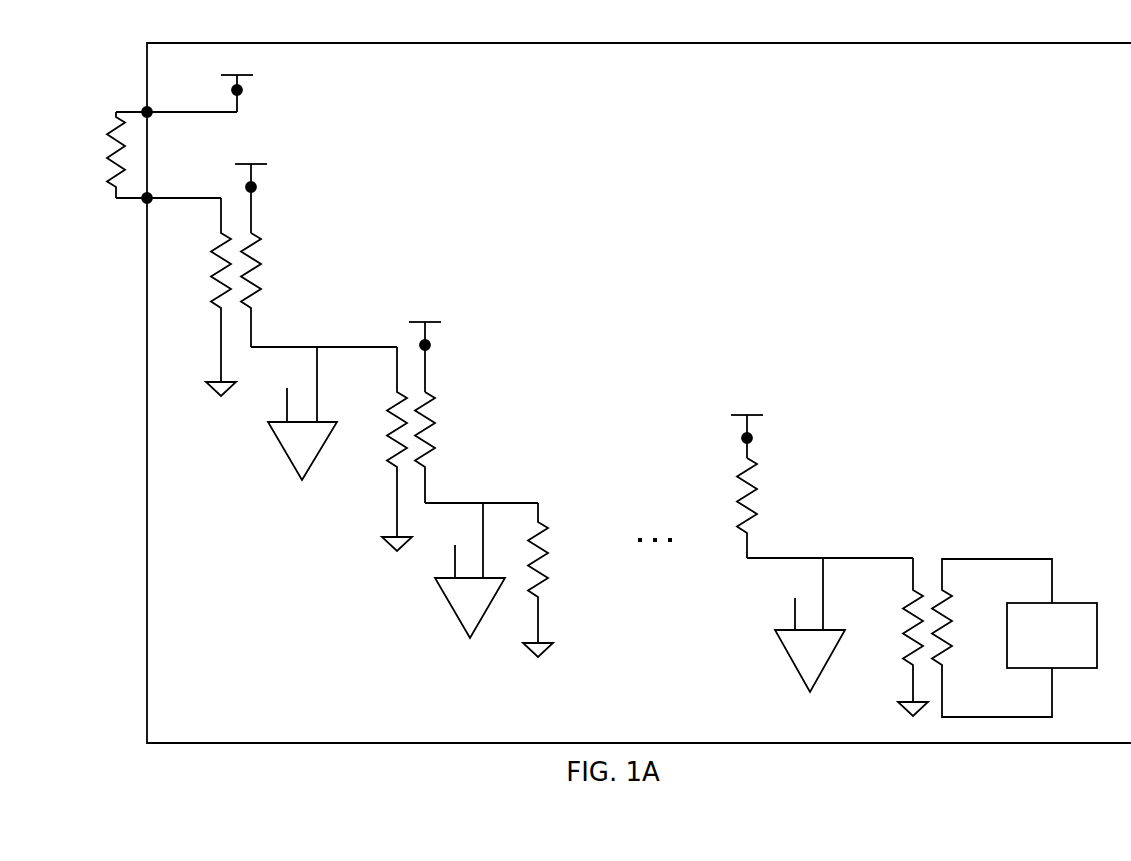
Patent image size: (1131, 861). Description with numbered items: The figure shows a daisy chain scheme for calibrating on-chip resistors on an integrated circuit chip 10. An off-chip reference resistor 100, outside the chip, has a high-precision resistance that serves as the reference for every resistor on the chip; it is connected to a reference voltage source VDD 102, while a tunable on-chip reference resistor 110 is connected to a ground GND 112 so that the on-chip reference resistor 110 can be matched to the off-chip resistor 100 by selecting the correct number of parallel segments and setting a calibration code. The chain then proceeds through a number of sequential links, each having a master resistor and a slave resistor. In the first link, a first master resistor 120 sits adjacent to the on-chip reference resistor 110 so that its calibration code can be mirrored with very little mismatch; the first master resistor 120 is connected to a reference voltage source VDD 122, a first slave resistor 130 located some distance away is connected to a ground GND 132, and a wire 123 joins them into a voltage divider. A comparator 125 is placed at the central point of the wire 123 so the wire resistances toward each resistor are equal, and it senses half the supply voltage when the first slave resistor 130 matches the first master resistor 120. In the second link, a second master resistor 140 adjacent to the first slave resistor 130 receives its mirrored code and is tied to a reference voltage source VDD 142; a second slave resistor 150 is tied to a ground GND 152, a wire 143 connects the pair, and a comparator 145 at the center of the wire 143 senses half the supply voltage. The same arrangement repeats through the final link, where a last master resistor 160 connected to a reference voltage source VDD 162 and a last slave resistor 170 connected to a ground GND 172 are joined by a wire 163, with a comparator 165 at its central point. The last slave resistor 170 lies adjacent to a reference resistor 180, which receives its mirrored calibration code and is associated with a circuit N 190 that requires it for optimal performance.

The integrated circuit (IC) chip 10 is at (980, 43).
The off-chip reference resistor R_off_ref 100 is at (124, 128).
The reference voltage source (VDD) 102 is at (258, 67).
The on-chip reference resistor R_on_ref 110 is at (218, 243).
The ground (GND) 112 is at (212, 388).
The master resistor R_m_1 120 is at (256, 237).
The reference voltage source (VDD) 122 is at (272, 156).
The wire 123 is at (340, 347).
The comparator 125 is at (288, 458).
The slave resistor R_s_1 130 is at (390, 455).
The ground (GND) 132 is at (390, 548).
The master resistor R_m_2 140 is at (433, 392).
The reference voltage source (VDD) 142 is at (446, 312).
The wire 143 is at (460, 503).
The comparator 145 is at (448, 610).
The slave resistor R_s_2 150 is at (545, 527).
The ground (GND) 152 is at (526, 650).
The master resistor R_m_N 160 is at (742, 467).
The reference voltage source (VDD) 162 is at (770, 405).
The wire 163 is at (805, 558).
The comparator 165 is at (790, 660).
The slave resistor R_s_N 170 is at (910, 592).
The ground (GND) 172 is at (902, 710).
The reference resistor R_ref_N 180 is at (950, 590).
The circuit N 190 is at (1075, 603).